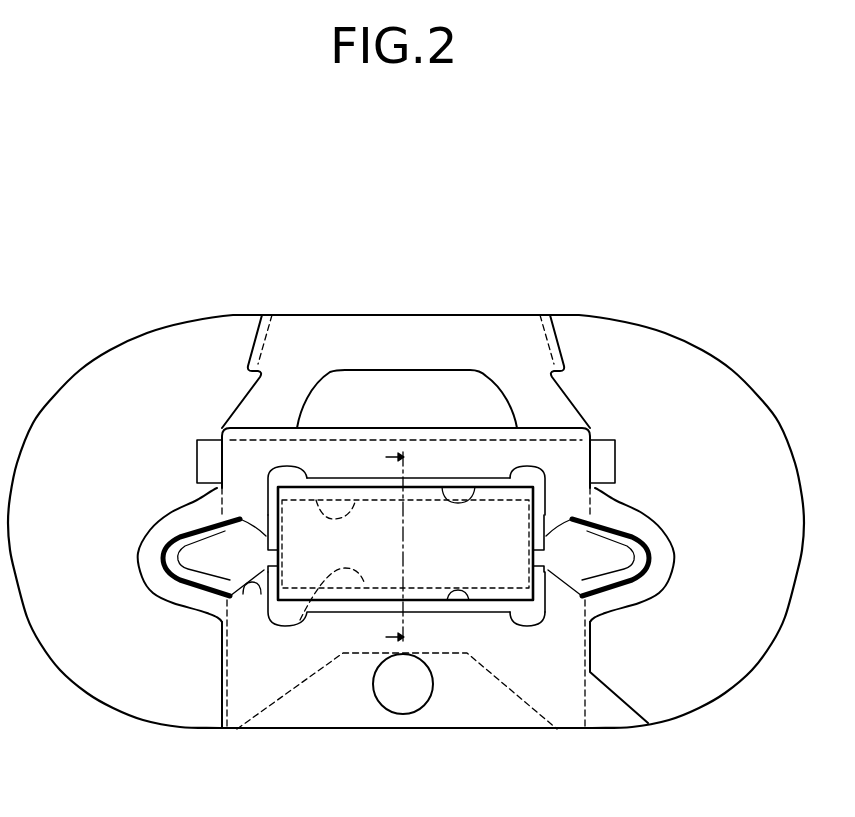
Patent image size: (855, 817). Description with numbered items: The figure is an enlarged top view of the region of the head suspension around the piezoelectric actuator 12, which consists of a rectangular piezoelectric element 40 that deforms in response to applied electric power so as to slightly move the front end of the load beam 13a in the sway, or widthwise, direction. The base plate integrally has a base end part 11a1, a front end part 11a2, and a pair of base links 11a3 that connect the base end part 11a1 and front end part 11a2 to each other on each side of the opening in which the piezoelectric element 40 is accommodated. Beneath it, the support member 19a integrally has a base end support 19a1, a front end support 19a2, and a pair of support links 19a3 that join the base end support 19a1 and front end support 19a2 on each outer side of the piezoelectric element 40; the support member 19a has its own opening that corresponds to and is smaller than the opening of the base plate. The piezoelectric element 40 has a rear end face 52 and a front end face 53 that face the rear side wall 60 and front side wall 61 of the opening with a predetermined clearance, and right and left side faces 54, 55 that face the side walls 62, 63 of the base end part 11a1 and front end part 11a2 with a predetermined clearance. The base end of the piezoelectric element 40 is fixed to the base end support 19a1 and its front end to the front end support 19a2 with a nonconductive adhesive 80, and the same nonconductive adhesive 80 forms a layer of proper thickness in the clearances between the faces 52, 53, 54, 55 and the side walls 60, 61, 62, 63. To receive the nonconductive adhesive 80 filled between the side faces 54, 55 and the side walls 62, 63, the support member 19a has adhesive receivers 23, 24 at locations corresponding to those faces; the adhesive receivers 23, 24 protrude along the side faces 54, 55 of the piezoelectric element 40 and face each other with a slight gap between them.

The base end part 11a1 is at (590, 670).
The front end part 11a2 is at (517, 455).
The base links 11a3 is at (148, 548).
The piezoelectric actuator 12 is at (434, 470).
The load beam 13a is at (432, 352).
The support member 19a is at (280, 705).
The base end support 19a1 is at (300, 620).
The front end support 19a2 is at (316, 500).
The support links 19a3 is at (170, 554).
The adhesive receiver 23 is at (215, 591).
The adhesive receiver 24 is at (238, 519).
The piezoelectric element 40 is at (452, 556).
The rear end face 52 is at (320, 612).
The front end face 53 is at (328, 488).
The right side face 54 is at (545, 590).
The left side face 55 is at (272, 598).
The rear side wall 60 is at (462, 612).
The front side wall 61 is at (466, 500).
The side wall 62 is at (543, 533).
The side wall 63 is at (266, 485).
The nonconductive adhesive 80 is at (537, 474).